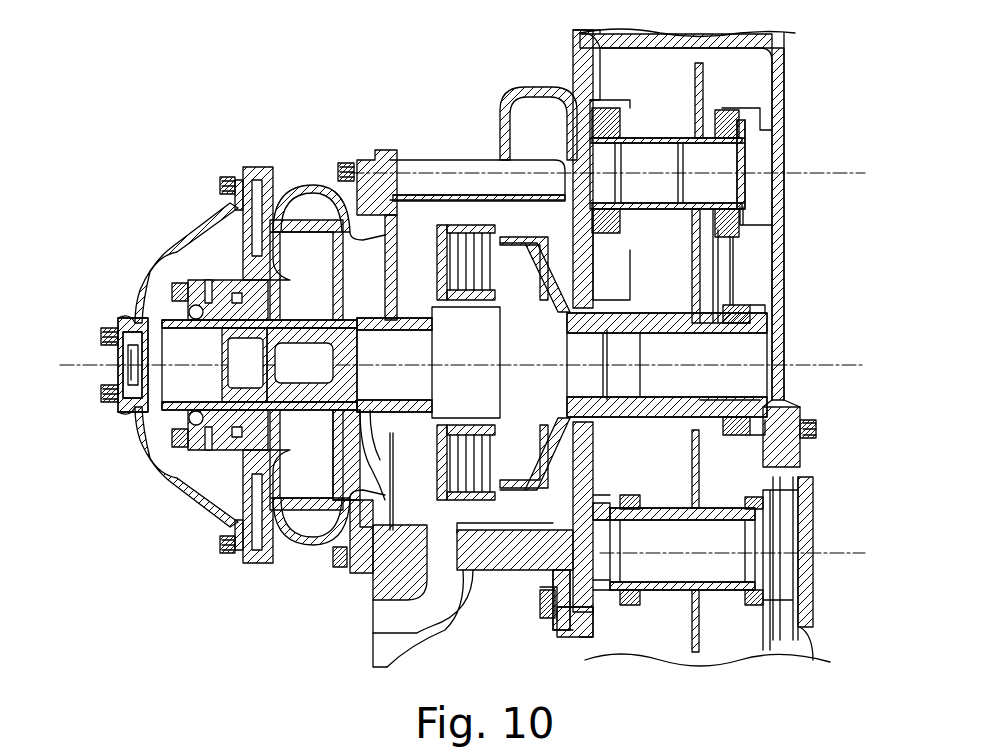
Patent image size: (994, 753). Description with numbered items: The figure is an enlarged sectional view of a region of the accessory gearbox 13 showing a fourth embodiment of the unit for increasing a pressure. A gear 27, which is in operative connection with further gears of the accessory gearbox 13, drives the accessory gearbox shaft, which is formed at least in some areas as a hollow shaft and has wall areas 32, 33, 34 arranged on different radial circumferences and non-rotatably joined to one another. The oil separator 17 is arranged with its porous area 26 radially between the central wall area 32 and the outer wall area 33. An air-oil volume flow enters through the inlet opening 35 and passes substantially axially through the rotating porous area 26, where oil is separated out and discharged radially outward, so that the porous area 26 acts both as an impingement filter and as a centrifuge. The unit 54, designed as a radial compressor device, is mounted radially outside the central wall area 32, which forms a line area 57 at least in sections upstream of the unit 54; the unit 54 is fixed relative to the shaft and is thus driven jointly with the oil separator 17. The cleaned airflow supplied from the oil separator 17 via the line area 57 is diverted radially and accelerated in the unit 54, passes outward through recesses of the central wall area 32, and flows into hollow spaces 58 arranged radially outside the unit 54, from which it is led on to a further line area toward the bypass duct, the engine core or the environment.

The accessory gearbox 13 is at (204, 98).
The oil separator 17 is at (478, 218).
The porous area 26 is at (445, 238).
The gear 27 is at (715, 293).
The central wall area 32 is at (368, 160).
The outer wall area 33 is at (500, 248).
The wall area 34 is at (728, 348).
The inlet opening 35 is at (393, 617).
The unit for increasing a pressure 54 is at (306, 213).
The line area 57 is at (345, 308).
The hollow spaces 58 is at (300, 215).